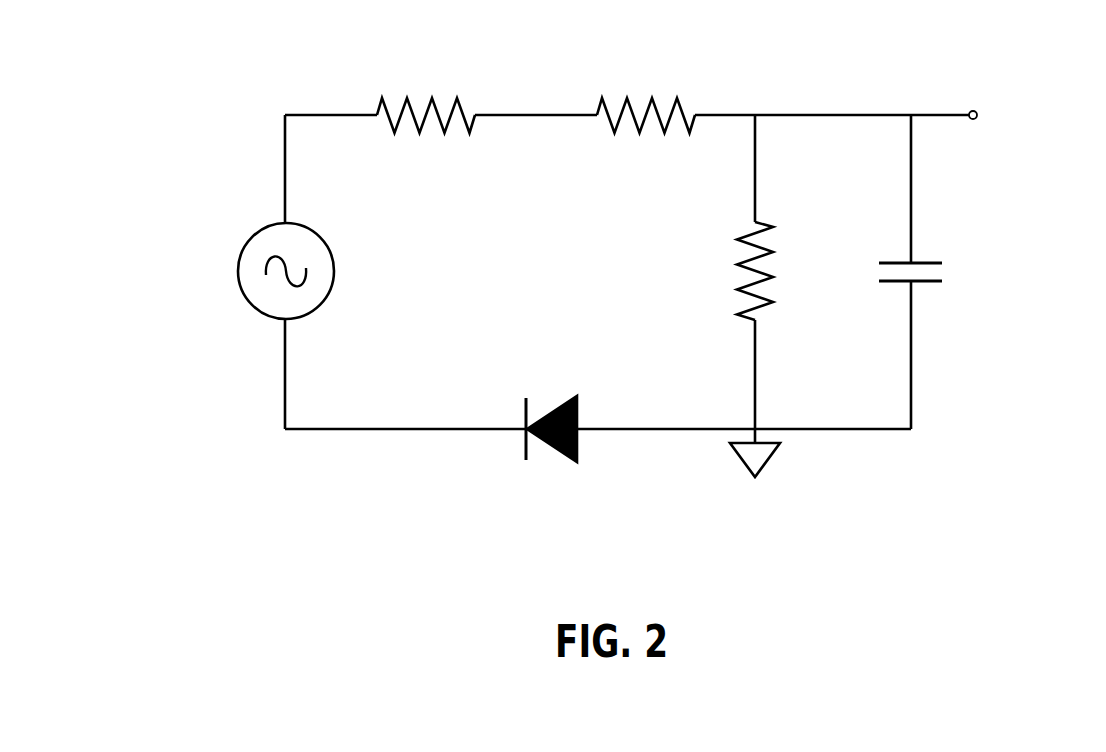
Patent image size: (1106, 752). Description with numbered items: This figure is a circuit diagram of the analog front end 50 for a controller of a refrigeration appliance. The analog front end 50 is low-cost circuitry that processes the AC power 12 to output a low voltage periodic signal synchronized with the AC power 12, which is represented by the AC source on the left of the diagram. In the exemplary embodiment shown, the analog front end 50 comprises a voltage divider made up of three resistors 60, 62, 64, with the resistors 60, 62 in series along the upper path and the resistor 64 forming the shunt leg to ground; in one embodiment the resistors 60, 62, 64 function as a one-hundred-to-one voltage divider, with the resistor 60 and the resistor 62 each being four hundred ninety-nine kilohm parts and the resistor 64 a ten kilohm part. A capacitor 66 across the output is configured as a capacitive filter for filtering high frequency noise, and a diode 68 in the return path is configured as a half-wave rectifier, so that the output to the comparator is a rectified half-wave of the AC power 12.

The analog front end 50 is at (314, 518).
The AC power 12 is at (258, 242).
The resistor 60 is at (407, 105).
The resistor 62 is at (640, 120).
The resistor 64 is at (748, 277).
The capacitor 66 is at (924, 262).
The diode 68 is at (565, 452).